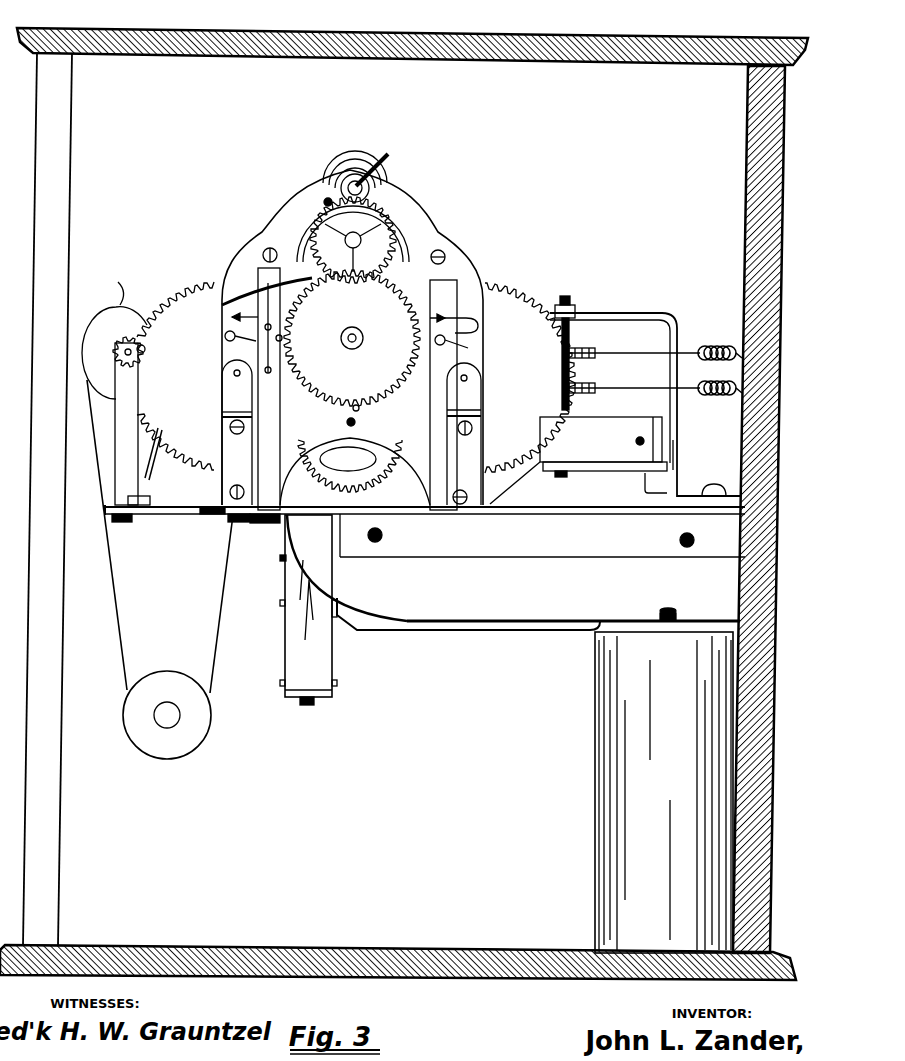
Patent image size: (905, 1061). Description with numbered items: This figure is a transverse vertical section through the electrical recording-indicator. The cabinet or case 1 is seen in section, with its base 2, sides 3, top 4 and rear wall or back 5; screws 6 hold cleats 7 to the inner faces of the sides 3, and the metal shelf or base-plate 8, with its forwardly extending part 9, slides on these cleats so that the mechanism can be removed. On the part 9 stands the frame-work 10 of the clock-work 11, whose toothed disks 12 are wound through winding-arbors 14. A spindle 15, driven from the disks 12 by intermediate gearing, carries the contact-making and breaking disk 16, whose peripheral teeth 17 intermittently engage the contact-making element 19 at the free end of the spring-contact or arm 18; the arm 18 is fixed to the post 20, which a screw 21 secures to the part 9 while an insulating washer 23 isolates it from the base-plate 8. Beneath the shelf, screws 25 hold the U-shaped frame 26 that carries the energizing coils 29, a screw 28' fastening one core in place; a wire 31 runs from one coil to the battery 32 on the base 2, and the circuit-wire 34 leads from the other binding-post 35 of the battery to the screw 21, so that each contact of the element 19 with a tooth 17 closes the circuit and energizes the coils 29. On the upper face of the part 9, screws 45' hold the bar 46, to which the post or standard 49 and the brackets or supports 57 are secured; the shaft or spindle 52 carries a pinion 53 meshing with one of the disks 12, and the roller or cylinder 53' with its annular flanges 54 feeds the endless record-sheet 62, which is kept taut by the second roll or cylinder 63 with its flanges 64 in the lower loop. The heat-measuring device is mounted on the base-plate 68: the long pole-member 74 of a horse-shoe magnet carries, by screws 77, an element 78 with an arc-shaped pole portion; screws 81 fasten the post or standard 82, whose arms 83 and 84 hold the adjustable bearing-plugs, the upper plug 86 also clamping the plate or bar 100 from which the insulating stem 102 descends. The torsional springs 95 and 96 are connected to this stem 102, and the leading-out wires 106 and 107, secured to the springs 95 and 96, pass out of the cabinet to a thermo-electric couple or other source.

The cabinet or case 1 is at (389, 983).
The base 2 is at (378, 948).
The sides 3 is at (70, 835).
The top 4 is at (490, 34).
The rear wall or back 5 is at (748, 160).
The screws 6 is at (378, 545).
The cleats 7 is at (542, 556).
The shelf or base-plate 8 is at (210, 507).
The forwardly extending part 9 is at (108, 512).
The frame-work 10 is at (427, 229).
The clock-work 11 is at (393, 176).
The geared or toothed disks 12 is at (200, 283).
The winding-arbors 14 is at (222, 372).
The spindle 15 is at (354, 337).
The contact-making and breaking disk 16 is at (350, 431).
The serrations or teeth 17 is at (281, 337).
The spring-contact or arm 18 is at (251, 266).
The contact-making element 19 is at (353, 248).
The standard or post 20 is at (267, 392).
The screw 21 is at (280, 558).
The insulating washer 23 is at (232, 522).
The screws 25 is at (310, 525).
The U-shaped frame 26 is at (305, 683).
The screw 28' is at (323, 716).
The energizing coils 29 is at (333, 648).
The wire 31 is at (495, 636).
The battery 32 is at (596, 762).
The circuit-wire 34 is at (412, 617).
The binding-post 35 is at (673, 614).
The screws 45' is at (141, 537).
The bar 46 is at (135, 500).
The post or standard 49 is at (130, 428).
The shaft or spindle 52 is at (145, 349).
The pinion 53 is at (139, 318).
The roller or cylinder 53' is at (111, 340).
The annular guides or flanges 54 is at (118, 276).
The brackets or supports 57 is at (151, 452).
The record-sheet 62 is at (212, 633).
The second roll or cylinder 63 is at (167, 738).
The guides or flanges 64 is at (208, 743).
The base-plate 68 is at (610, 506).
The long arm or pole-member 74 is at (595, 447).
The screws 77 is at (637, 440).
The elements 78 is at (660, 437).
The screws 81 is at (730, 494).
The post or standard 82 is at (678, 458).
The arm 83 is at (650, 312).
The arm 84 is at (640, 473).
The bearing-plug 86 is at (567, 300).
The torsional spring 95 is at (598, 391).
The torsional spring 96 is at (594, 356).
The plate or bar 100 is at (578, 308).
The stem 102 is at (571, 328).
The leading-out circuit wire 106 is at (686, 394).
The leading-out circuit wire 107 is at (694, 350).